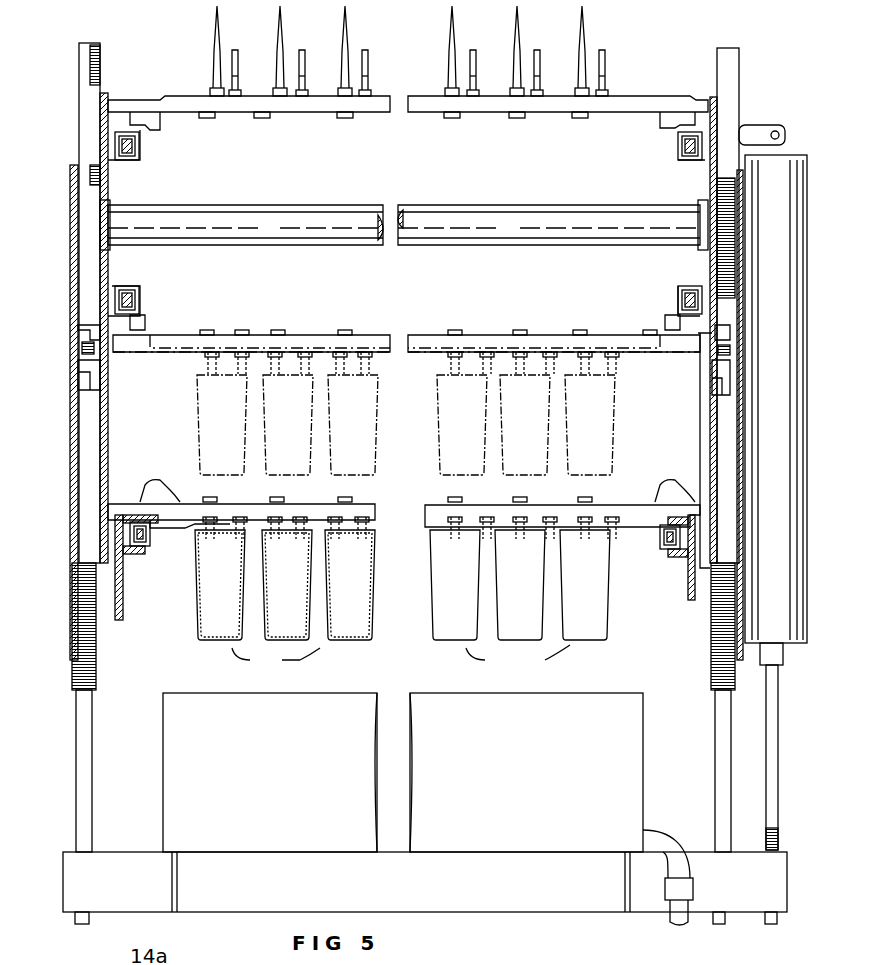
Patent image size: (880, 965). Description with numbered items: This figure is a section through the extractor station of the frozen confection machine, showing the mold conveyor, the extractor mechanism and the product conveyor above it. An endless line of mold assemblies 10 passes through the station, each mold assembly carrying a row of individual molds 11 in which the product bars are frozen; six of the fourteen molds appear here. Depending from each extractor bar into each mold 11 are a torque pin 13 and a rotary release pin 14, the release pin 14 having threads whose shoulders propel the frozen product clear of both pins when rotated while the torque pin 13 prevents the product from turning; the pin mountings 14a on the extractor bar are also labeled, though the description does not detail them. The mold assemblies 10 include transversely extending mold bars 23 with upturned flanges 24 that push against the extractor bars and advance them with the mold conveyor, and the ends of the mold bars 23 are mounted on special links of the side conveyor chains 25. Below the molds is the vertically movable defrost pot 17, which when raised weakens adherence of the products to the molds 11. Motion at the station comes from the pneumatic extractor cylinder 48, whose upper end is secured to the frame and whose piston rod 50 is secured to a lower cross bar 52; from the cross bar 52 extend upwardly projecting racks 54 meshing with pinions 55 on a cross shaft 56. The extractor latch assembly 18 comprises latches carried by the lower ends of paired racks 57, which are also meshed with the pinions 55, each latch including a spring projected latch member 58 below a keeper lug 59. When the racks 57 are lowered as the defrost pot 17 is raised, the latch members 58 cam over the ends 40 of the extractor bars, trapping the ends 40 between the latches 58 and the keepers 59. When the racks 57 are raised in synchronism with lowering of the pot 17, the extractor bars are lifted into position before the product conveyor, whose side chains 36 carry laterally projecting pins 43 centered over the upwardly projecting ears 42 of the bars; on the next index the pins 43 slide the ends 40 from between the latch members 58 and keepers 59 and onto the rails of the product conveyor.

The mold assembly 10 is at (192, 622).
The individual mold 11 is at (401, 660).
The torque pin 13 is at (232, 61).
The rotary release pin 14 is at (278, 22).
The pin mounting bolts 14a is at (262, 120).
The defrost pot 17 is at (416, 694).
The extractor latch assembly 18 is at (80, 384).
The mold bar 23 is at (183, 500).
The upturned flange 24 is at (612, 520).
The side conveyor chain 25 is at (140, 548).
The side chain 36 is at (680, 152).
The end of extractor bar 40 is at (113, 340).
The ear 42 is at (160, 332).
The pin 43 is at (145, 325).
The pneumatic extractor cylinder 48 is at (752, 430).
The piston rod 50 is at (778, 720).
The lower cross bar 52 is at (752, 892).
The rack 54 is at (74, 672).
The pinion 55 is at (80, 255).
The cross shaft 56 is at (420, 240).
The paired rack 57 is at (79, 90).
The spring projected latch member 58 is at (84, 352).
The keeper lug 59 is at (95, 330).